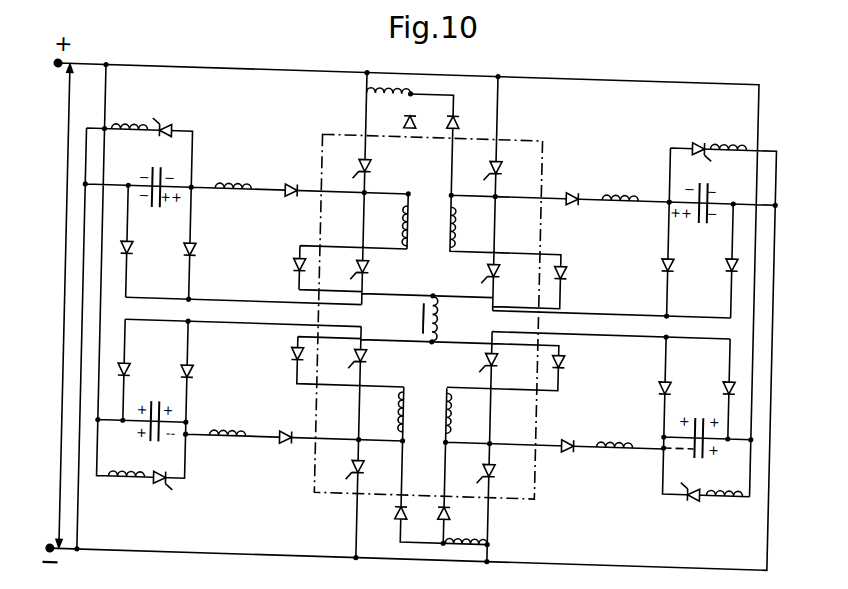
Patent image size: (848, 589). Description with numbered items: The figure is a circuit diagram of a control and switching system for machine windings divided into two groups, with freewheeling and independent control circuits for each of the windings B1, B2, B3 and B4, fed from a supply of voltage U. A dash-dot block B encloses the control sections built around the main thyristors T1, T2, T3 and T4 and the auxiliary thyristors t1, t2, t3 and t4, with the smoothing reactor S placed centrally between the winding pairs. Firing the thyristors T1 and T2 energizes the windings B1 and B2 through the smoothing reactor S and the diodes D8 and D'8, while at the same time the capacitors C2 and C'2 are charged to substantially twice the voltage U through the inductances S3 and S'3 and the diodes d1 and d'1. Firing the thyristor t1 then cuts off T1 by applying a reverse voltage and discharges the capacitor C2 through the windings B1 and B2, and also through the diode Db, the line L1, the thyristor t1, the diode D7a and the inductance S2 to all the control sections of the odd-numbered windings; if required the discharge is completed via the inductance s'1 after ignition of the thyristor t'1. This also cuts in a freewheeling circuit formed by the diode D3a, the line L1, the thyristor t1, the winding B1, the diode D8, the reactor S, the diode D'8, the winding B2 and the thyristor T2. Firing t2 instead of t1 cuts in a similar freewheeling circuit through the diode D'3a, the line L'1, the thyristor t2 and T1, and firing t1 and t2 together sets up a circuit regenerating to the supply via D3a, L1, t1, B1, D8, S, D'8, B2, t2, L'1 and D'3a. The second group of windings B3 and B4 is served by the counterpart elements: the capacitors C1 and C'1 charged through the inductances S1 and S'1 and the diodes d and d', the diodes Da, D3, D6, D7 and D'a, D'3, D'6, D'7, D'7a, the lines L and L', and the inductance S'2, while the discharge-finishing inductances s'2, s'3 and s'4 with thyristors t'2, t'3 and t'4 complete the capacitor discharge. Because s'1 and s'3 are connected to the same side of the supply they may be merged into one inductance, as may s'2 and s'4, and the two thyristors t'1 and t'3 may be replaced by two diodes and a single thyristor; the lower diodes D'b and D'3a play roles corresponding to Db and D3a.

The supply voltage U is at (57, 306).
The inductance s'1 is at (130, 108).
The thyristor t'1 is at (168, 111).
The capacitor C2 is at (150, 177).
The inductance S3 is at (233, 179).
The diode d1 is at (286, 178).
The diode D3a is at (135, 250).
The diode Db is at (198, 250).
The line L1 is at (241, 295).
The diode D8 is at (297, 261).
The thyristor t1 is at (360, 260).
The thyristor T1 is at (374, 157).
The thyristor T3 is at (505, 155).
The control section block B is at (329, 123).
The inductance S2 is at (388, 78).
The diode D7a is at (406, 114).
The diode D7 is at (461, 112).
The winding B1 is at (407, 214).
The winding B3 is at (458, 214).
The thyristor t3 is at (490, 258).
The diode D6 is at (573, 258).
The line L is at (612, 300).
The diode Da is at (666, 249).
The diode D3 is at (731, 249).
The capacitor C1 is at (714, 173).
The thyristor t'3 is at (697, 133).
The inductance s'3 is at (730, 128).
The diode d is at (572, 179).
The inductance S1 is at (619, 178).
The smoothing reactor S is at (414, 317).
The thyristor t2 is at (360, 351).
The thyristor t4 is at (491, 348).
The diode D'8 is at (280, 363).
The diode D'6 is at (575, 371).
The line L' is at (611, 347).
The diode D'3 is at (713, 375).
The diode D'a is at (644, 397).
The diode D'3a is at (145, 354).
The diode D'b is at (204, 354).
The line L'1 is at (242, 340).
The capacitor C'2 is at (131, 431).
The inductance s'2 is at (123, 495).
The thyristor t'2 is at (158, 495).
The inductance S'3 is at (228, 416).
The diode d'1 is at (278, 422).
The winding B2 is at (407, 408).
The winding B4 is at (459, 405).
The thyristor T2 is at (361, 458).
The thyristor T4 is at (505, 458).
The diode D'7a is at (380, 523).
The diode D'7 is at (464, 517).
The inductance S'2 is at (472, 563).
The diode d' is at (568, 429).
The inductance S'1 is at (614, 466).
The capacitor C'1 is at (717, 444).
The thyristor t'4 is at (693, 511).
The inductance s'4 is at (724, 514).